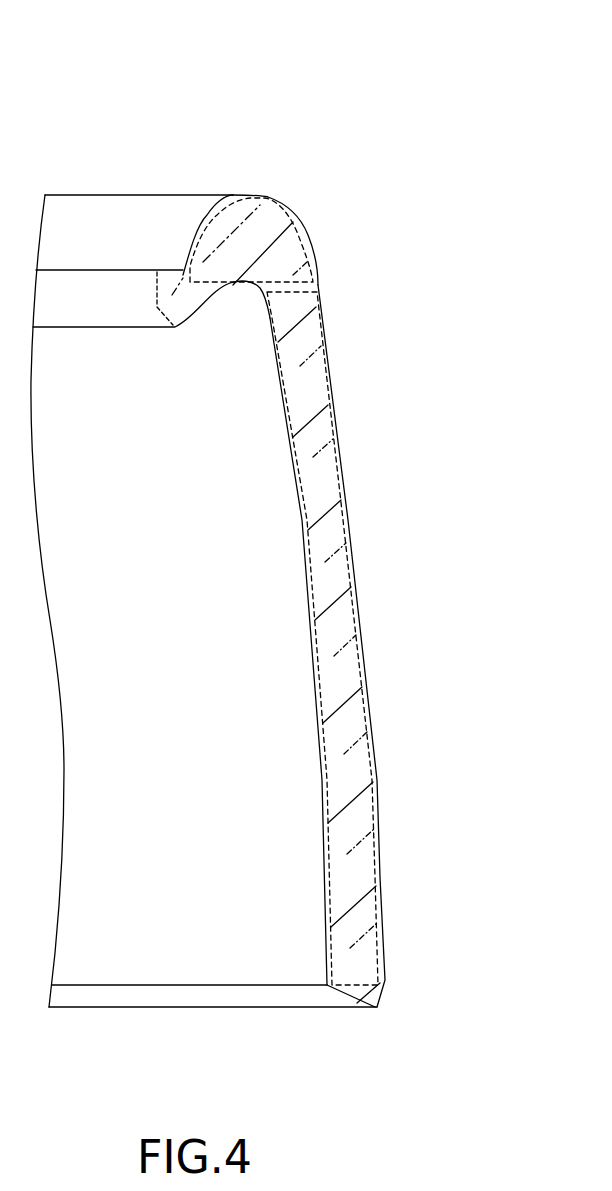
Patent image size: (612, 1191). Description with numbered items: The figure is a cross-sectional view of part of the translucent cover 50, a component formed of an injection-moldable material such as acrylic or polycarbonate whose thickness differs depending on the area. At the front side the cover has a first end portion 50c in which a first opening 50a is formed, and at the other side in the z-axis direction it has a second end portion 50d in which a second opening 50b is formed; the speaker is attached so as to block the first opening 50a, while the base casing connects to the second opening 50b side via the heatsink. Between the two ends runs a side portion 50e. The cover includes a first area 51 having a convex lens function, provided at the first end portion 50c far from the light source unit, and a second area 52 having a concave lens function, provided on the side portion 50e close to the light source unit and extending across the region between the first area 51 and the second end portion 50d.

The translucent cover 50 is at (72, 88).
The first opening 50a is at (117, 196).
The second opening 50b is at (163, 997).
The first end portion 50c is at (262, 195).
The second end portion 50d is at (355, 1002).
The side portion 50e is at (400, 988).
The first area 51 is at (310, 238).
The second area 52 is at (377, 766).